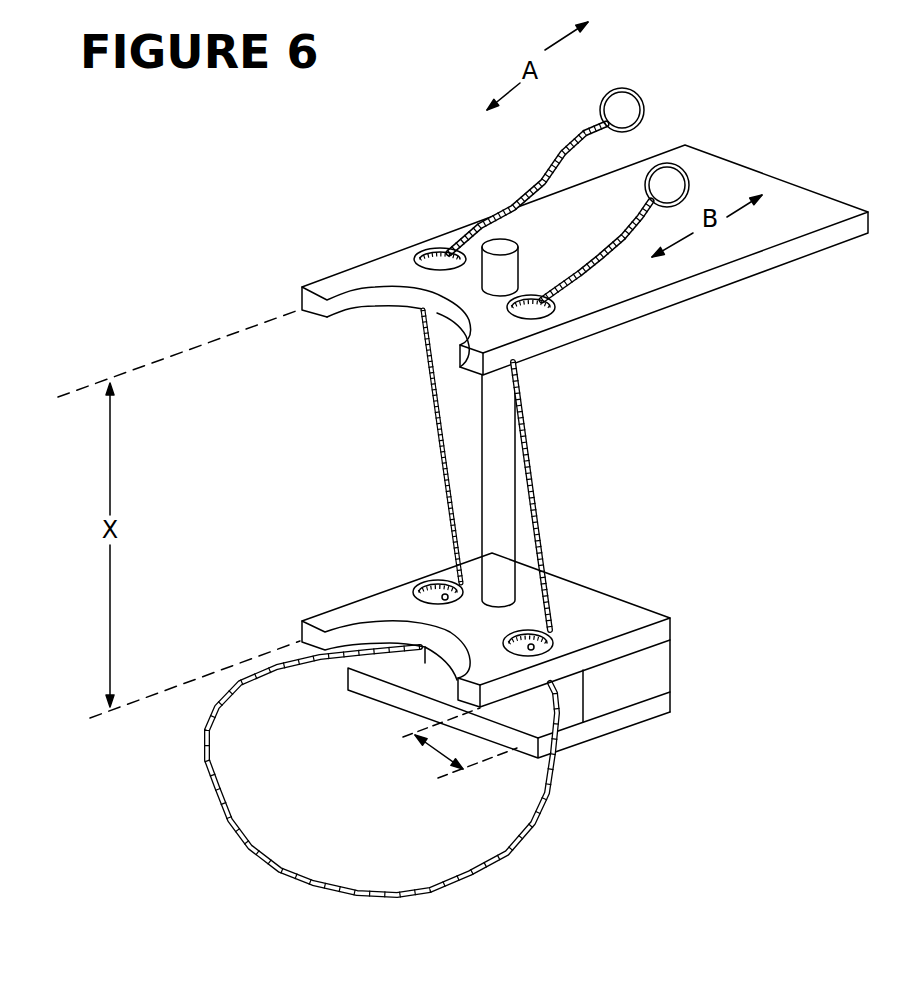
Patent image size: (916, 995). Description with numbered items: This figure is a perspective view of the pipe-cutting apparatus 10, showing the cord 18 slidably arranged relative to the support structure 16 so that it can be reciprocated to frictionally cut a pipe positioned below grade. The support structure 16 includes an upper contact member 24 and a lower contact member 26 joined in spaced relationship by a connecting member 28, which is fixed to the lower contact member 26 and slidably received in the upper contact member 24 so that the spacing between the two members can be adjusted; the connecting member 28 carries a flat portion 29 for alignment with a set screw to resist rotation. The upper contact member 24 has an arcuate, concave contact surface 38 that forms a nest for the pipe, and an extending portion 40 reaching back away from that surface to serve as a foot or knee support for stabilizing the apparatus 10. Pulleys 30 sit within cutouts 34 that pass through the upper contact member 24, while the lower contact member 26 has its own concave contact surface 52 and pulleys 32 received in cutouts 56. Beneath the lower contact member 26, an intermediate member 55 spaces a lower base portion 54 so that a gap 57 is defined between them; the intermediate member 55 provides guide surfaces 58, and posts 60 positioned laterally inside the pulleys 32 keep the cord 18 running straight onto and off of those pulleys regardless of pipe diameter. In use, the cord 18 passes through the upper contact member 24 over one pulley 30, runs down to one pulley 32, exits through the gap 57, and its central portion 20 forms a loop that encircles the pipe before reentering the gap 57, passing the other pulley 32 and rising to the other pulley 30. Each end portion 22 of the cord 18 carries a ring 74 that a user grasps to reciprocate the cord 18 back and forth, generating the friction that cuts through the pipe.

The apparatus 10 is at (152, 230).
The support structure 16 is at (712, 550).
The cord 18 is at (438, 413).
The central portion 20 is at (545, 817).
The end portions 22 is at (608, 247).
The upper contact member 24 is at (352, 278).
The lower contact member 26 is at (343, 608).
The connecting member 28 is at (490, 484).
The flat portion 29 is at (510, 237).
The pulleys 30 is at (447, 250).
The pulleys 32 is at (437, 583).
The cutouts 34 is at (449, 263).
The contact surface 38 is at (388, 298).
The extending portion 40 is at (803, 210).
The contact surface 52 is at (345, 633).
The lower base portion 54 is at (573, 735).
The intermediate member 55 is at (637, 675).
The cutouts 56 is at (428, 590).
The gap 57 is at (440, 777).
The guide surfaces 58 is at (575, 695).
The posts 60 is at (420, 660).
The rings 74 is at (640, 105).